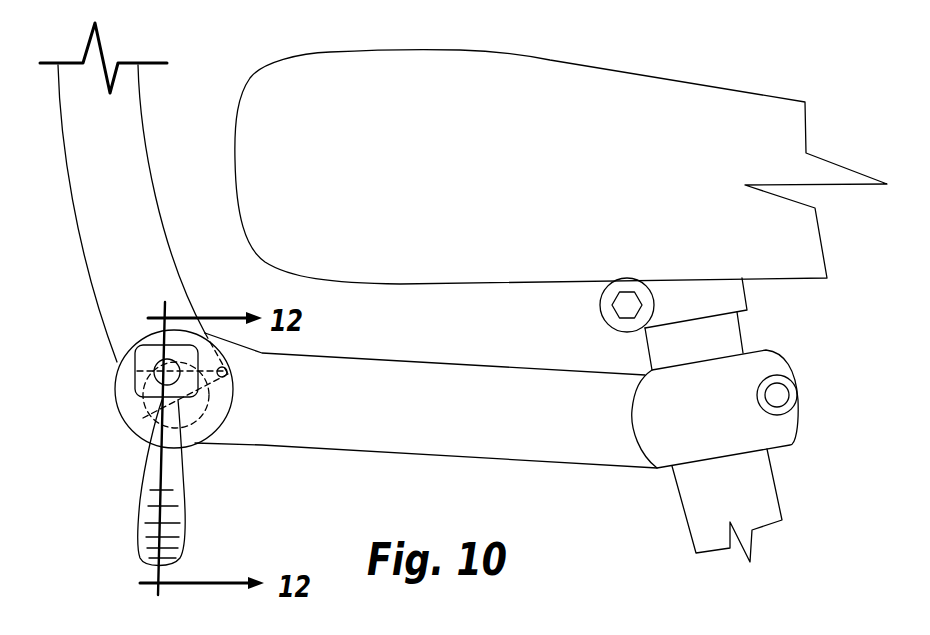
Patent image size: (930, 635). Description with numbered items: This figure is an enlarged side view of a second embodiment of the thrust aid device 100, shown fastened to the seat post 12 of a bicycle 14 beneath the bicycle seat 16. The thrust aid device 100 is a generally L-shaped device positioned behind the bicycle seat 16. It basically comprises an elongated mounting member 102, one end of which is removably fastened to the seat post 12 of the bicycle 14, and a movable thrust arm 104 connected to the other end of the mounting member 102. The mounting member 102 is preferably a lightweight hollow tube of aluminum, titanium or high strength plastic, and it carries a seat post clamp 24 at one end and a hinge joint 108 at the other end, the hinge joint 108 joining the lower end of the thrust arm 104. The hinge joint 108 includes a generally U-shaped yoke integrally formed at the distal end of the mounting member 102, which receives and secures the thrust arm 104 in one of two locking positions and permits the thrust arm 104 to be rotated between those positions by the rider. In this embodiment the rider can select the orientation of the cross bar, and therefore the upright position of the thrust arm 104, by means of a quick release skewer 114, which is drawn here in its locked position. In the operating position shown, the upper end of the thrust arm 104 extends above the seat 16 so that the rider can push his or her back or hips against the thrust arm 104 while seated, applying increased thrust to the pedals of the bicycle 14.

The seat post 12 is at (680, 502).
The bicycle 14 is at (812, 518).
The bicycle seat 16 is at (667, 93).
The seat post clamp 24 is at (768, 348).
The thrust aid device 100 is at (88, 356).
The elongated mounting member 102 is at (417, 362).
The thrust arm 104 is at (153, 180).
The hinge joint 108 is at (117, 443).
The quick release skewer 114 is at (185, 477).